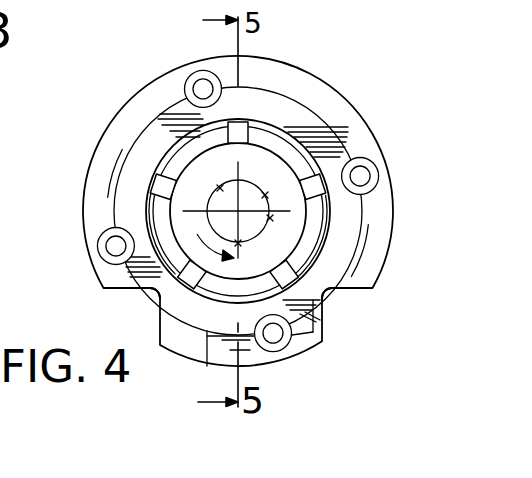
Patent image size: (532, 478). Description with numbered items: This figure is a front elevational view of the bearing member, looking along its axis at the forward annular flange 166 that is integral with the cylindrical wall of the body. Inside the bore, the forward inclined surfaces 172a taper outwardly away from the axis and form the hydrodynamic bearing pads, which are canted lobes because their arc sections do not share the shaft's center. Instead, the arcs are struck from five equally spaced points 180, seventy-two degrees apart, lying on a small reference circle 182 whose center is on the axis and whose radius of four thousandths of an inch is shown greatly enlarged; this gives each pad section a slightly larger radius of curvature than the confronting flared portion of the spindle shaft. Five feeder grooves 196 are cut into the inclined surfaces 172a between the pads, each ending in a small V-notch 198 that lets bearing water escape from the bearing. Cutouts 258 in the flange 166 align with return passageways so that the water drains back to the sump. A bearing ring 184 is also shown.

The annular flange 166 is at (318, 104).
The forward inclined surfaces 172a is at (152, 178).
The points 180 is at (157, 255).
The reference circle 182 is at (262, 240).
The retaining ring 184 is at (197, 233).
The feeder grooves 196 is at (157, 168).
The V-notch 198 is at (237, 122).
The cutouts 258 is at (133, 293).